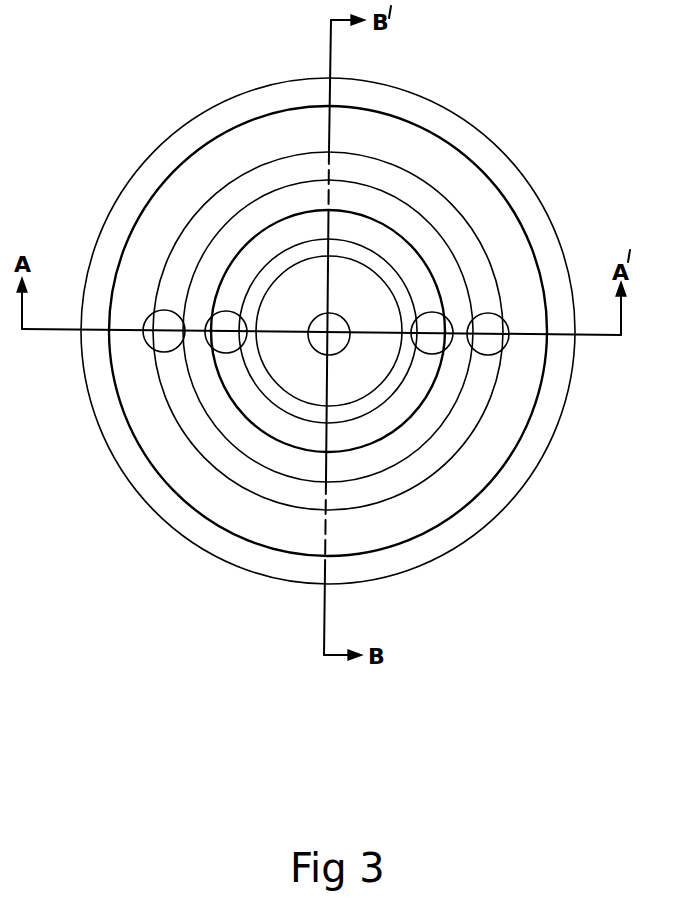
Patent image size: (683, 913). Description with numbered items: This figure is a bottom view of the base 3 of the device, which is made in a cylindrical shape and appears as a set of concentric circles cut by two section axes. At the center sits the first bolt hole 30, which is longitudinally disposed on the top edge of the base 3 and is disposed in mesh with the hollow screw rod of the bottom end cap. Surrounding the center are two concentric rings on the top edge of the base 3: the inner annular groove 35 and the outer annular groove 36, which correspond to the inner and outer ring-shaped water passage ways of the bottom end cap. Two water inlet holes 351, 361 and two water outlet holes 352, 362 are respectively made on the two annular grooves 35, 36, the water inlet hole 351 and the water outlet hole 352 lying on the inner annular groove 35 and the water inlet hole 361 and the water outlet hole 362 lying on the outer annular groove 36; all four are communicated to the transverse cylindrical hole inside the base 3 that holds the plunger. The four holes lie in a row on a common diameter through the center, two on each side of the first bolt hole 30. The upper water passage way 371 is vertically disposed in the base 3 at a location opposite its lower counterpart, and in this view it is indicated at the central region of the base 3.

The base 3 is at (433, 94).
The first bolt hole 30 is at (382, 277).
The inner annular groove 35 is at (252, 400).
The outer annular groove 36 is at (182, 403).
The water inlet hole 351 is at (217, 313).
The water outlet hole 352 is at (432, 313).
The water inlet hole 361 is at (153, 313).
The water outlet hole 362 is at (490, 313).
The upper water passage way 371 is at (343, 352).